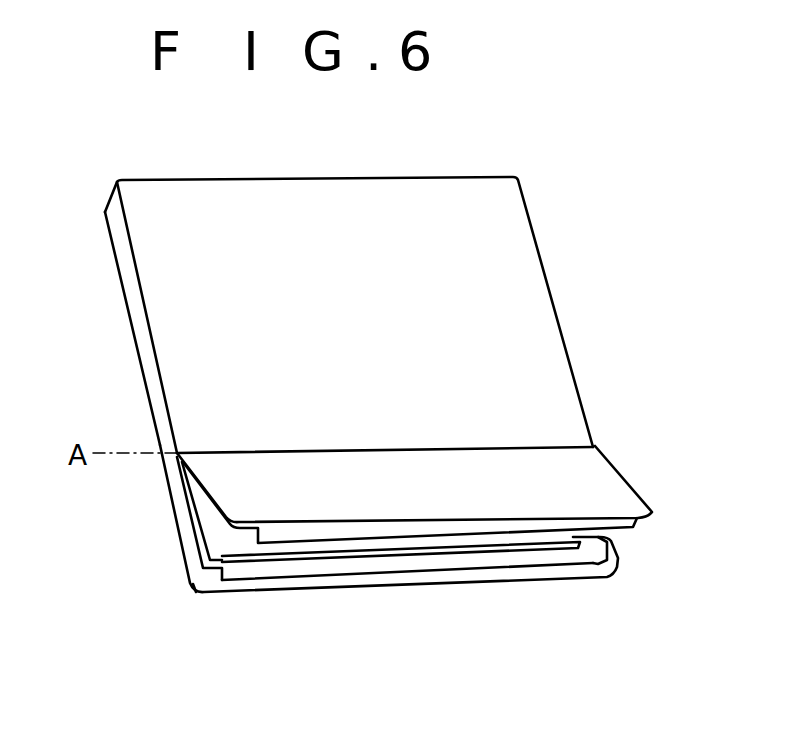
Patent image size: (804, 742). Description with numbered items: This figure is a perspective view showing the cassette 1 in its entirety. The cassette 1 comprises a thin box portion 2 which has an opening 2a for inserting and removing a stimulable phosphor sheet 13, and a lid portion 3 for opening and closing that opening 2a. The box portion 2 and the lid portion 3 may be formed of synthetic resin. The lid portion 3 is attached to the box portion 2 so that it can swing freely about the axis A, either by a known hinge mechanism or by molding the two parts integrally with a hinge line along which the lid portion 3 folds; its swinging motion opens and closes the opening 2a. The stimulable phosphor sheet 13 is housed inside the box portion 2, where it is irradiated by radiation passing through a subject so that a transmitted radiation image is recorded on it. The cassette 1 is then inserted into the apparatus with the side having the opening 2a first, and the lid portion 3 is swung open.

The cassette 1 is at (330, 142).
The box portion 2 is at (177, 563).
The opening 2a is at (383, 572).
The lid portion 3 is at (612, 484).
The stimulable phosphor sheet 13 is at (488, 547).